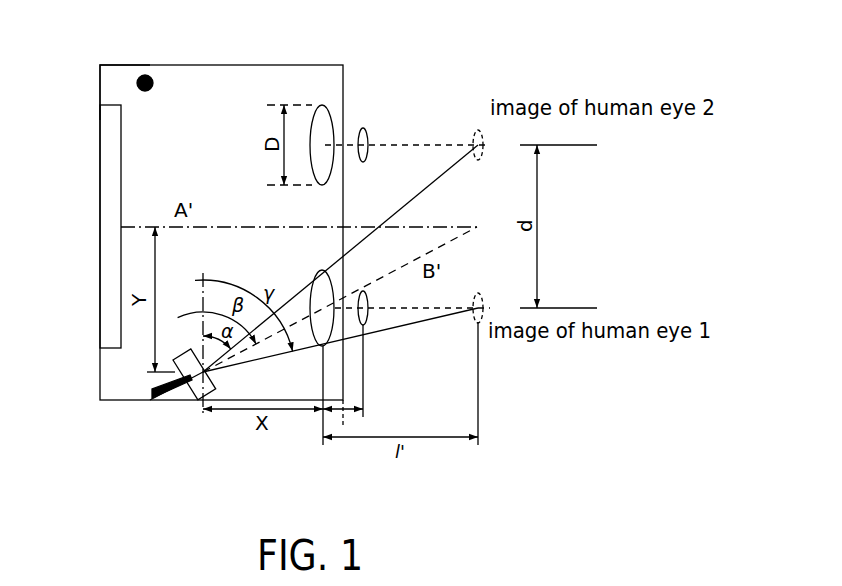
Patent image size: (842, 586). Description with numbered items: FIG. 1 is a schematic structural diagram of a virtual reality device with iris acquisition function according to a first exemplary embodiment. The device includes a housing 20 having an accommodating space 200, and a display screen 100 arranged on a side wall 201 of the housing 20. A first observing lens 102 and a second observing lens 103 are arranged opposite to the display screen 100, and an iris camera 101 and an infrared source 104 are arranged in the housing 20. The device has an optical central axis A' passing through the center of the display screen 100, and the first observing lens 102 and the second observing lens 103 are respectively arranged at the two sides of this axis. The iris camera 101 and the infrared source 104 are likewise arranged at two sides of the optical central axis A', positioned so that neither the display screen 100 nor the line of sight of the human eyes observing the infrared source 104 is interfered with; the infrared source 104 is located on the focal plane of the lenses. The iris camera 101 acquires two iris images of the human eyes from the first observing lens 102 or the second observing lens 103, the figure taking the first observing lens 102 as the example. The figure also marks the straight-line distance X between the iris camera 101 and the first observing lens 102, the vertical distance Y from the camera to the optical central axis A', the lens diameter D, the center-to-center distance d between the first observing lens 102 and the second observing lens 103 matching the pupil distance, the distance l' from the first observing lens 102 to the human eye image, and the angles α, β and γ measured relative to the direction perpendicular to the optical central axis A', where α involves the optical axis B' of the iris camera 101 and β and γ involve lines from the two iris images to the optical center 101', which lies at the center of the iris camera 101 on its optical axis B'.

The housing 20 is at (270, 60).
The side wall 201 is at (100, 73).
The accommodating space 200 is at (199, 101).
The infrared source 104 is at (140, 76).
The display screen 100 is at (92, 263).
The second observing lens 103 is at (328, 101).
The first observing lens 102 is at (336, 268).
The iris camera 101 is at (148, 423).
The optical center 101' is at (208, 408).